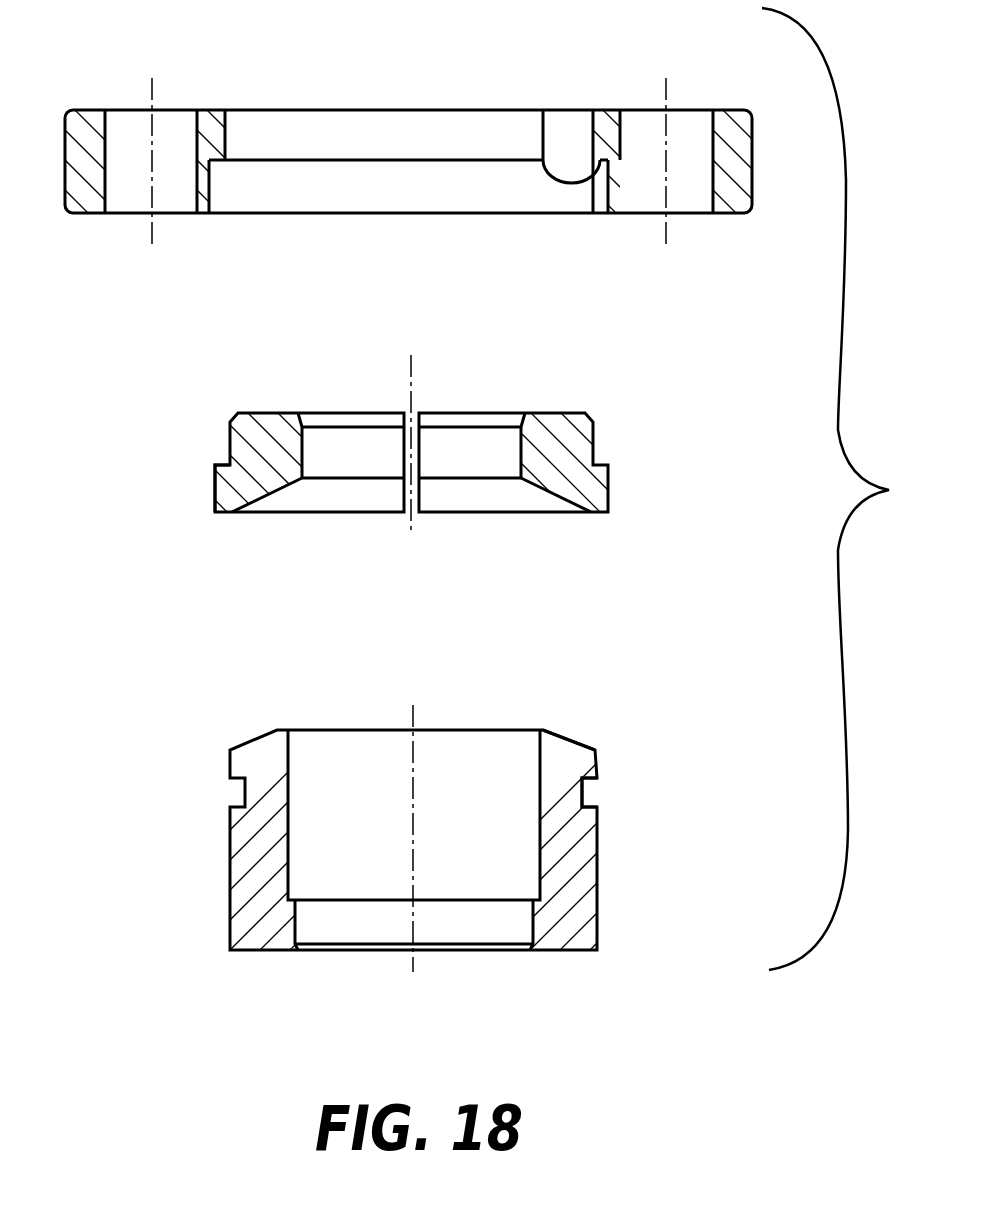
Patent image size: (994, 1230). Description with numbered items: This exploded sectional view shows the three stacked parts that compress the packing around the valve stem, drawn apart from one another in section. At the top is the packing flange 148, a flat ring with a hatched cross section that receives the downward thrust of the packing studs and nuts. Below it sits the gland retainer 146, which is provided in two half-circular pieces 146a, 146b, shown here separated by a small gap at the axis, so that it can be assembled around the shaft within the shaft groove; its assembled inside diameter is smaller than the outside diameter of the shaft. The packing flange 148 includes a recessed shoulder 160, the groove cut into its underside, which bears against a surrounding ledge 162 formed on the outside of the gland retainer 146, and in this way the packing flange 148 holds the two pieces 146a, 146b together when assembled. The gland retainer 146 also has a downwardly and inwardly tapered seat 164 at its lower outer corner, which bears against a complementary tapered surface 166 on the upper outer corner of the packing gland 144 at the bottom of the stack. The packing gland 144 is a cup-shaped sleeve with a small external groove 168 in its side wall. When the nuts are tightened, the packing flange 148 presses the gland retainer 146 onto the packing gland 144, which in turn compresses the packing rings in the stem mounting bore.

The packing gland 144 is at (512, 862).
The gland retainer 146 is at (516, 534).
The first piece of gland retainer 146a is at (358, 412).
The second piece of gland retainer 146b is at (478, 412).
The packing flange 148 is at (497, 222).
The recessed shoulder 160 is at (543, 110).
The surrounding ledge 162 is at (222, 462).
The tapered seat 164 is at (552, 492).
The tapered surface 166 is at (572, 734).
The groove in body 168 is at (584, 794).